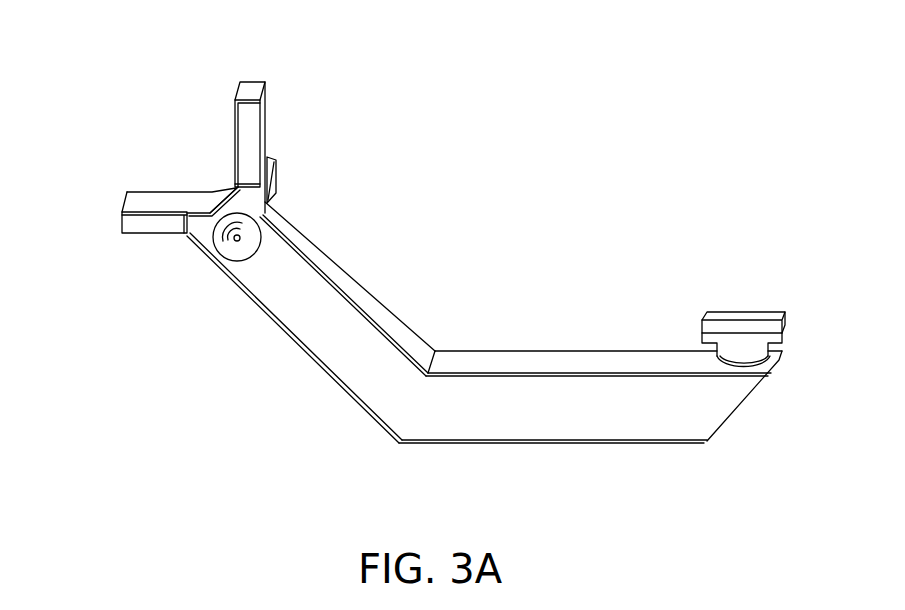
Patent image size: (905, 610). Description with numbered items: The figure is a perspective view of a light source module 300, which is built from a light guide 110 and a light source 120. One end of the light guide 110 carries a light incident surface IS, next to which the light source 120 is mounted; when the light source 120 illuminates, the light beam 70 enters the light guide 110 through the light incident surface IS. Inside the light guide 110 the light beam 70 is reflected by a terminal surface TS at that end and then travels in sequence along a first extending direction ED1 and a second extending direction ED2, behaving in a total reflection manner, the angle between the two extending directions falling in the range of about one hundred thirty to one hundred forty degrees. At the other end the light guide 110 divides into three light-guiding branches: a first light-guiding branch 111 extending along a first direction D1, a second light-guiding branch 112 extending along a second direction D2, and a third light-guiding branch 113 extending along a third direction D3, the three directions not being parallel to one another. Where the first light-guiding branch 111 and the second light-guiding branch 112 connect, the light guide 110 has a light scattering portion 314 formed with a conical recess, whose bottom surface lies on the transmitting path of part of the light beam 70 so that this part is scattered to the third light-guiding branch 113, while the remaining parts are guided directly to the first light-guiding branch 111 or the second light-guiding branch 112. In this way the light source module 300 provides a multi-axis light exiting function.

The light guide 110 is at (432, 293).
The first light-guiding branch 111 is at (140, 200).
The second light-guiding branch 112 is at (247, 117).
The third light-guiding branch 113 is at (270, 186).
The light scattering portion 314 is at (210, 203).
The light source 120 is at (745, 320).
The light beam 70 is at (743, 375).
The light source module 300 is at (818, 521).
The light incident surface IS is at (722, 365).
The terminal surface TS is at (728, 418).
The first extending direction ED1 is at (700, 409).
The second extending direction ED2 is at (279, 282).
The first direction D1 is at (122, 218).
The second direction D2 is at (250, 82).
The third direction D3 is at (276, 181).